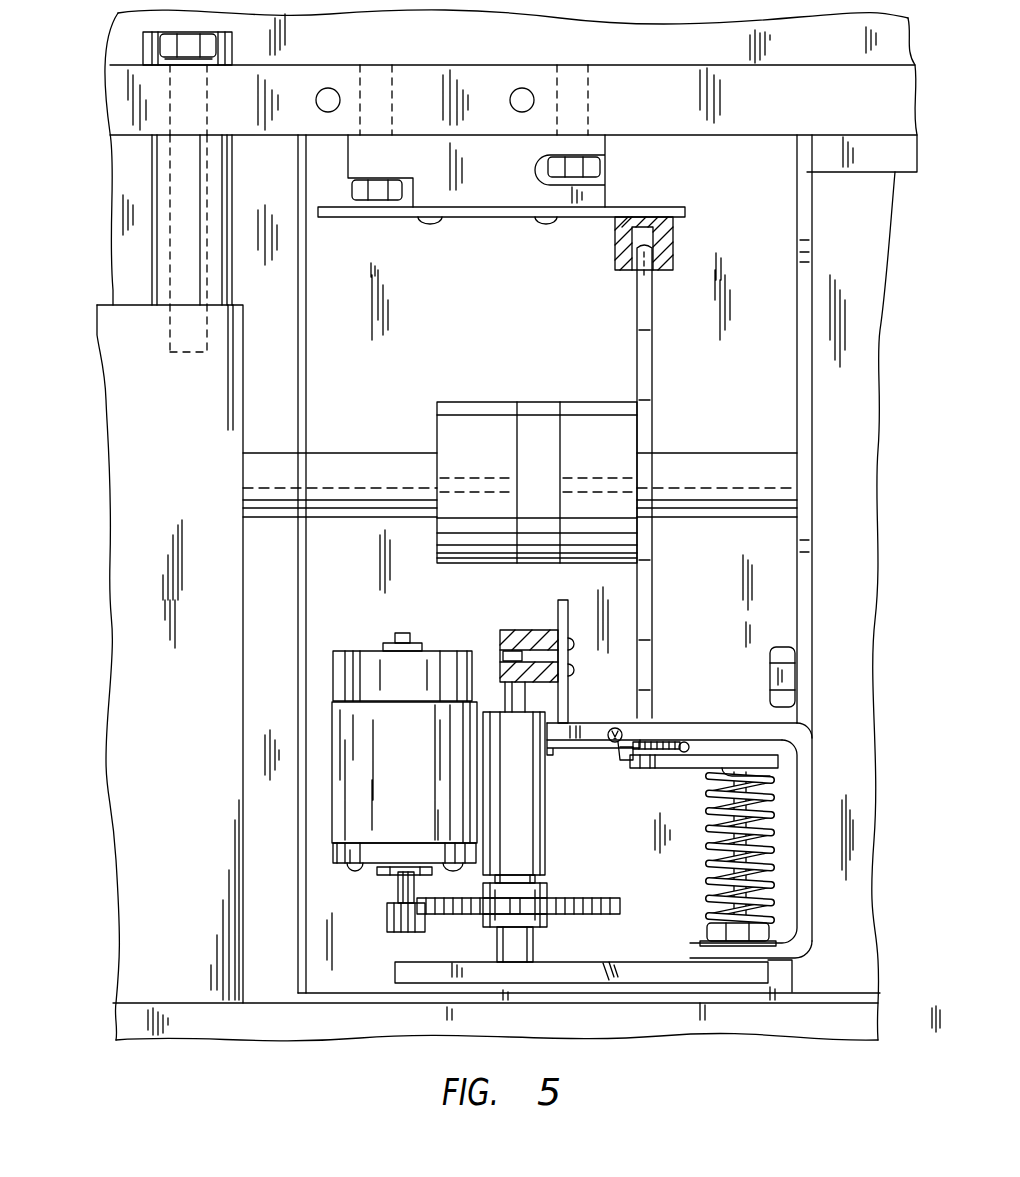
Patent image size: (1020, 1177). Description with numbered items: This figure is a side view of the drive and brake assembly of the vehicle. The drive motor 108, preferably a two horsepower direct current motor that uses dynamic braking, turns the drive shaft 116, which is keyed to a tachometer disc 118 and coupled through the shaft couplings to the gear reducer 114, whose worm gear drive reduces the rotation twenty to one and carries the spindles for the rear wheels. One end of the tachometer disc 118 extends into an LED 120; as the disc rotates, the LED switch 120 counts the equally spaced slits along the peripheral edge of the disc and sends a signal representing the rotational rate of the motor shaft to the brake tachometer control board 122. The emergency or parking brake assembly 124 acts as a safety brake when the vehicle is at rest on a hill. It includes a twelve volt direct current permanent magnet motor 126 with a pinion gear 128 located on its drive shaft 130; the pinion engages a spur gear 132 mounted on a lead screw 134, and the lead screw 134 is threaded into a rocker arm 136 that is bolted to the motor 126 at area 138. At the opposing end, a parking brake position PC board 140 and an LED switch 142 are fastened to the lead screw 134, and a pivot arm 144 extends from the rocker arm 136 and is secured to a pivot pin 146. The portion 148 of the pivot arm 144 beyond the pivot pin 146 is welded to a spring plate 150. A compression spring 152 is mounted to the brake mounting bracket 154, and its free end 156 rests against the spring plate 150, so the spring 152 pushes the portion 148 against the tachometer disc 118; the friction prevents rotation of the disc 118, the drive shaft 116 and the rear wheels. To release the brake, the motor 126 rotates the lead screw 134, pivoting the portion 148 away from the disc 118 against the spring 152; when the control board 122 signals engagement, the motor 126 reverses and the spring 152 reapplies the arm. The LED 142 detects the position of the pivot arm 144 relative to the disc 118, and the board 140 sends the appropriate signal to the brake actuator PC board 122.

The motor 108 is at (522, 525).
The gear reducer 114 is at (116, 388).
The drive shaft 116 is at (405, 455).
The tachometer disc 118 is at (655, 400).
The LED 120 is at (615, 258).
The brake tachometer control board 122 is at (367, 218).
The emergency or parking brake assembly 124 is at (790, 560).
The motor 126 is at (355, 650).
The pinion gear 128 is at (390, 928).
The drive shaft 130 is at (396, 896).
The spur gear 132 is at (612, 899).
The lead screw 134 is at (535, 878).
The rocker arm 136 is at (546, 808).
The area 138 is at (475, 867).
The parking brake position PC board 140 is at (560, 603).
The LED switch 142 is at (518, 631).
The pivot arm 144 is at (580, 738).
The pivot pin 146 is at (614, 744).
The portion of the pivot arm 148 is at (688, 745).
The spring plate 150 is at (669, 769).
The compression spring 152 is at (712, 895).
The brake mounting bracket 154 is at (797, 952).
The free end 156 is at (770, 776).